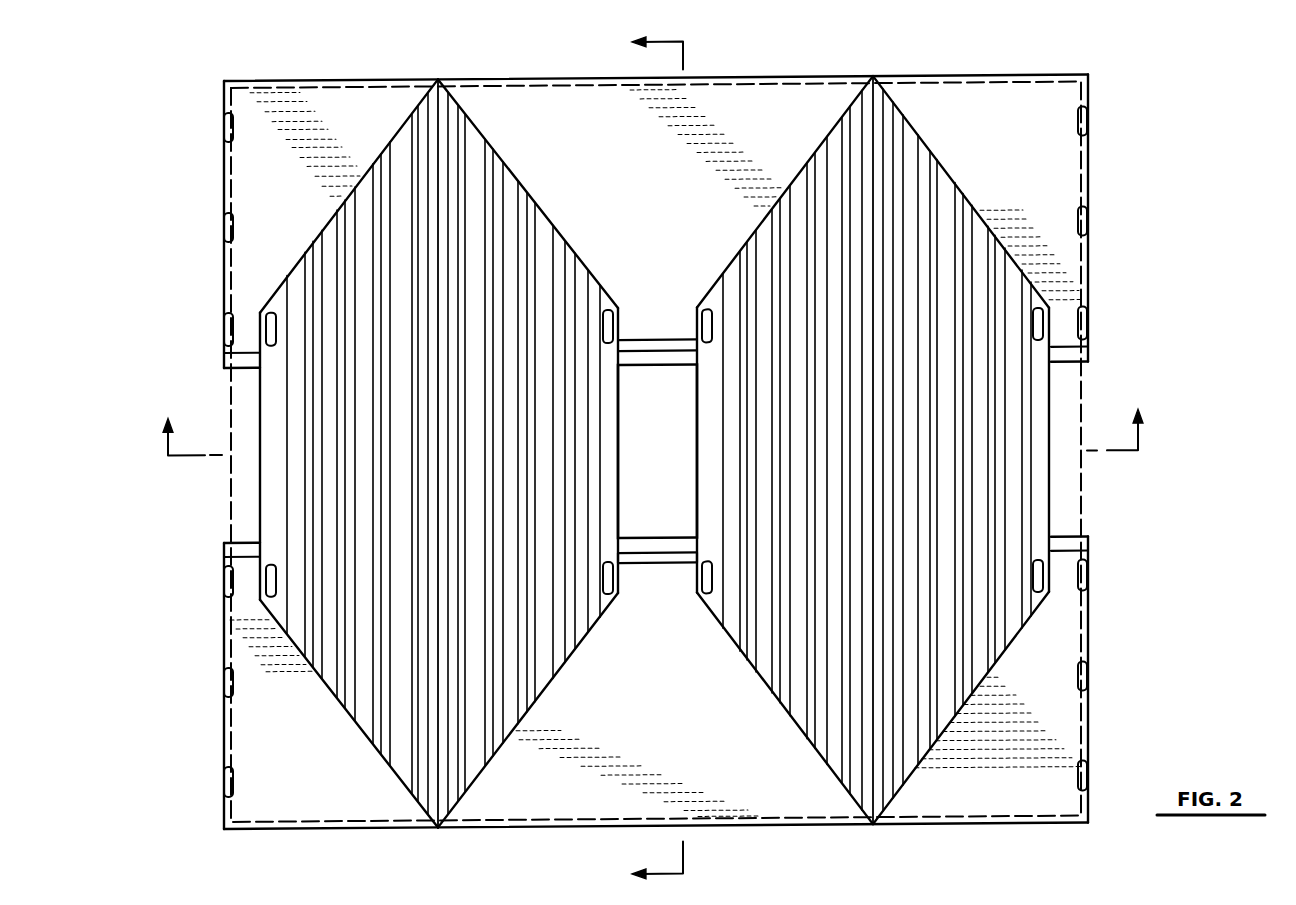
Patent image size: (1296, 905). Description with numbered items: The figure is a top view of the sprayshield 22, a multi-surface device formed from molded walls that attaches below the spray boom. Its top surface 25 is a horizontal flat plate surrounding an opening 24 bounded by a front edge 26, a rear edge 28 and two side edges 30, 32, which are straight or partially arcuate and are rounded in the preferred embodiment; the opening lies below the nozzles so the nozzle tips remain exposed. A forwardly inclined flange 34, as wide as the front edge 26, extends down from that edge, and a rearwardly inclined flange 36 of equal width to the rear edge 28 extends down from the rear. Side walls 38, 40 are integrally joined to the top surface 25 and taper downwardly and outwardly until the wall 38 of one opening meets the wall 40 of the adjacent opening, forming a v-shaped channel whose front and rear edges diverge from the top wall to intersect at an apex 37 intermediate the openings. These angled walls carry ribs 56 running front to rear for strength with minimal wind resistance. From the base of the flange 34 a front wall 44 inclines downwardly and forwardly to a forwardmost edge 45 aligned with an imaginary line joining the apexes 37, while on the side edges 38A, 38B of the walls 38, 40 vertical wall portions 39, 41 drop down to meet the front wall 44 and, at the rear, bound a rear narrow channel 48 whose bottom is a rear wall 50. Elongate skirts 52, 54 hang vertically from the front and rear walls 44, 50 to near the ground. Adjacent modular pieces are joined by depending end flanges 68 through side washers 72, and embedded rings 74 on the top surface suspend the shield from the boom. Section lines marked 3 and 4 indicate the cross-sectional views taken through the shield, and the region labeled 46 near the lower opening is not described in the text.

The sprayshield 22 is at (1162, 278).
The opening 24 is at (632, 527).
The top surface 25 is at (625, 450).
The front edge 26 is at (245, 546).
The rear edge 28 is at (245, 376).
The side edge 30 is at (620, 433).
The side edge 32 is at (698, 481).
The forwardly inclined flange 34 is at (225, 556).
The rearwardly inclined flange 36 is at (262, 344).
The apex 37 is at (438, 78).
The side wall 38 is at (515, 262).
The side edge 38A is at (558, 706).
The side edge 38B is at (800, 739).
The vertical wall portion 39 is at (325, 221).
The side wall 40 is at (400, 162).
The vertical wall portion 41 is at (520, 177).
The front wall 44 is at (737, 782).
The forwardmost edge 45 is at (548, 830).
The lower opening 46 is at (633, 591).
The rear narrow channel 48 is at (636, 322).
The rear wall 50 is at (760, 118).
The elongate skirt 52 is at (300, 829).
The elongate skirt 54 is at (968, 81).
The ribs 56 is at (895, 160).
The flange 68 is at (224, 281).
The side washer 72 is at (1086, 232).
The embedded ring 74 is at (270, 313).
The section line 3 is at (653, 432).
The section line 4 is at (646, 459).